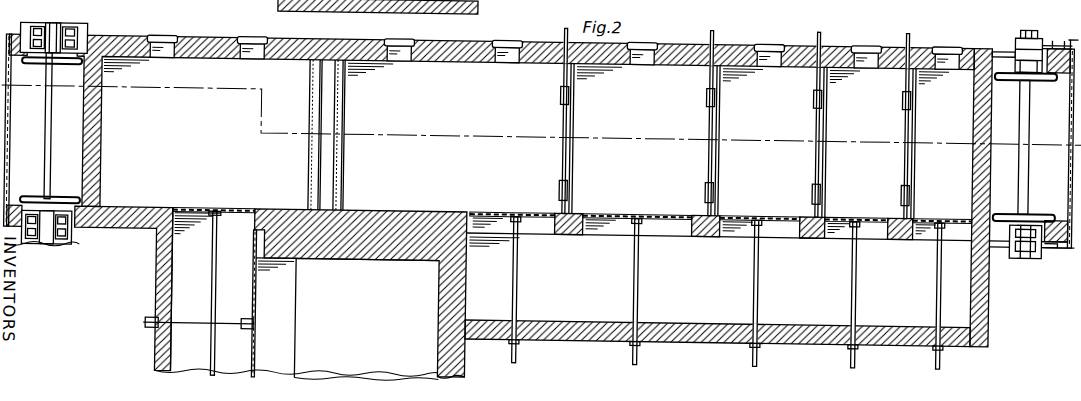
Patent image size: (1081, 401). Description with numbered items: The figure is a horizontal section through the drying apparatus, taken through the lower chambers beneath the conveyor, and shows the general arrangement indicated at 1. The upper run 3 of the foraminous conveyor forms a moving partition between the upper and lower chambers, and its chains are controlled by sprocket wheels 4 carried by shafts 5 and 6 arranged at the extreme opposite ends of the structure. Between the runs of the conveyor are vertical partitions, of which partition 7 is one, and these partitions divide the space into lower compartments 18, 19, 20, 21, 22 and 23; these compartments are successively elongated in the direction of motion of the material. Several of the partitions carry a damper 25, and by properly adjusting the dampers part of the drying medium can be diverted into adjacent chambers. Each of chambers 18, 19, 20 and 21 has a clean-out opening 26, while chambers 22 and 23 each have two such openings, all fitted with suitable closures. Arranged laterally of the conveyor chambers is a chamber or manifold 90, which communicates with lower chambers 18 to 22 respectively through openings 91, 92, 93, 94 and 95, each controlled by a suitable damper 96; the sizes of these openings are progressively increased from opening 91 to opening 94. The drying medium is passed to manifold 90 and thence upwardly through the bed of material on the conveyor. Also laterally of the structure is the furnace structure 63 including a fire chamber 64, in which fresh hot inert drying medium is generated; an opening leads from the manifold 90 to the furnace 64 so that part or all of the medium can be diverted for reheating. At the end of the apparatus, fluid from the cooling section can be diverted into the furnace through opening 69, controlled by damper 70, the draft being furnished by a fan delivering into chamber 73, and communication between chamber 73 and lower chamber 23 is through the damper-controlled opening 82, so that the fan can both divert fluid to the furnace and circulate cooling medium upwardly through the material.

The apparatus housing 1 is at (735, 29).
The upper run of the conveyor 3 is at (1058, 115).
The sprocket wheels 4 is at (72, 61).
The shaft 5 is at (1027, 122).
The shaft 6 is at (43, 146).
The vertical partition 7 is at (860, 0).
The compartment 18 is at (963, 60).
The compartment 19 is at (837, 60).
The compartment 20 is at (783, 60).
The compartment 21 is at (675, 62).
The compartment 22 is at (465, 60).
The compartment 23 is at (128, 66).
The damper 25 is at (560, 150).
The clean-out opening 26 is at (155, 44).
The furnace structure 63 is at (477, 366).
The fire chamber 64 is at (398, 356).
The opening 69 is at (292, 351).
The damper 70 is at (252, 353).
The chamber 73 is at (180, 289).
The damper-controlled opening 82 is at (237, 220).
The manifold 90 is at (593, 304).
The opening 91 is at (932, 224).
The opening 92 is at (843, 224).
The opening 93 is at (740, 226).
The opening 94 is at (613, 224).
The opening 95 is at (535, 222).
The damper 96 is at (527, 205).